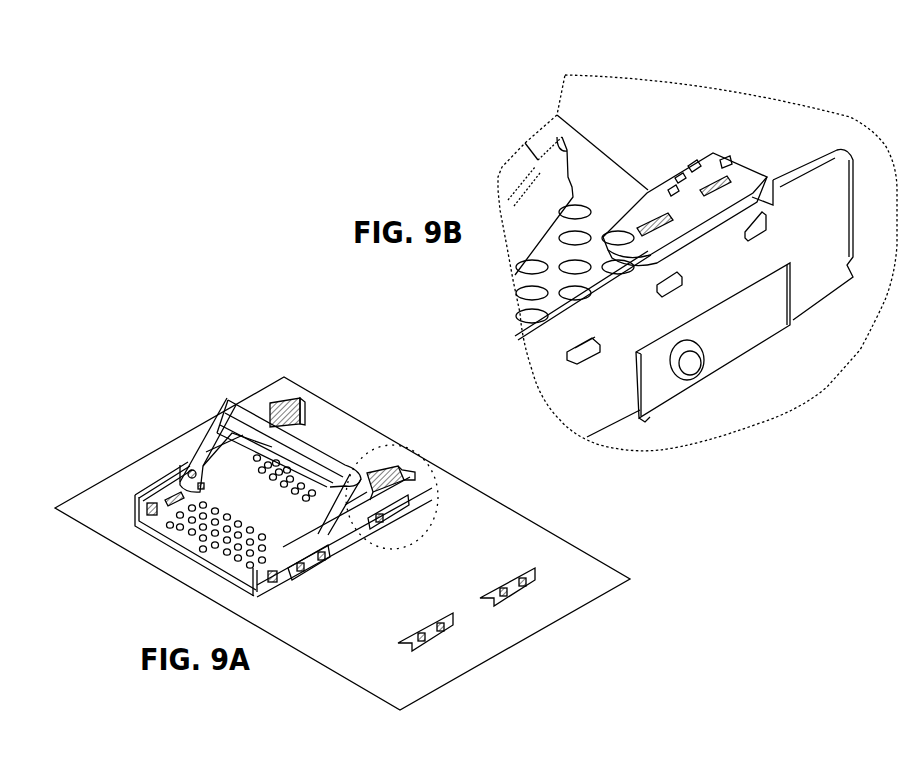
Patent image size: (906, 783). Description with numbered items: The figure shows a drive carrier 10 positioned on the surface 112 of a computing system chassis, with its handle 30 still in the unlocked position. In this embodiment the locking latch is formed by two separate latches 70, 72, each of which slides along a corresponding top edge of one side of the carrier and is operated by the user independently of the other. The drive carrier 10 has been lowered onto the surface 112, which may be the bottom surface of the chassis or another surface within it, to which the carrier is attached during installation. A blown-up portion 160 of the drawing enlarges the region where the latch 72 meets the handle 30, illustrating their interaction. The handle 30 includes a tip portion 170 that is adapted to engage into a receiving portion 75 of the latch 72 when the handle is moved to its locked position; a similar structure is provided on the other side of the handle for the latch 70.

In FIG. 9A, the drive carrier 10 is at (203, 380).
In FIG. 9A, the handle 30 is at (256, 415).
In FIG. 9B, the handle 30 is at (503, 210).
In FIG. 9A, the latch 70 is at (283, 413).
In FIG. 9A, the latch 72 is at (412, 473).
In FIG. 9B, the latch 72 is at (695, 163).
In FIG. 9B, the receiving portion 75 is at (648, 217).
In FIG. 9A, the surface 112 is at (92, 508).
In FIG. 9A, the blown-up portion 160 is at (415, 450).
In FIG. 9B, the blown-up portion 160 is at (657, 83).
In FIG. 9B, the tip portion 170 is at (557, 137).